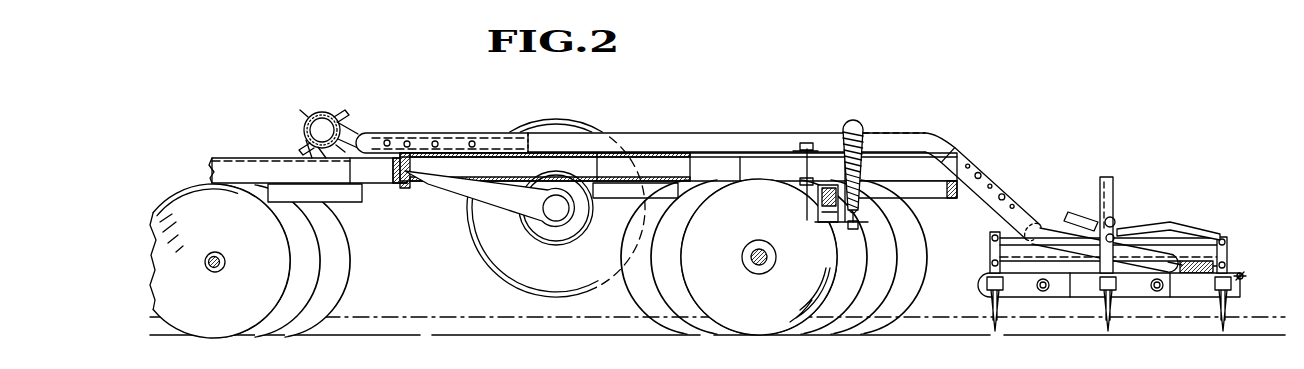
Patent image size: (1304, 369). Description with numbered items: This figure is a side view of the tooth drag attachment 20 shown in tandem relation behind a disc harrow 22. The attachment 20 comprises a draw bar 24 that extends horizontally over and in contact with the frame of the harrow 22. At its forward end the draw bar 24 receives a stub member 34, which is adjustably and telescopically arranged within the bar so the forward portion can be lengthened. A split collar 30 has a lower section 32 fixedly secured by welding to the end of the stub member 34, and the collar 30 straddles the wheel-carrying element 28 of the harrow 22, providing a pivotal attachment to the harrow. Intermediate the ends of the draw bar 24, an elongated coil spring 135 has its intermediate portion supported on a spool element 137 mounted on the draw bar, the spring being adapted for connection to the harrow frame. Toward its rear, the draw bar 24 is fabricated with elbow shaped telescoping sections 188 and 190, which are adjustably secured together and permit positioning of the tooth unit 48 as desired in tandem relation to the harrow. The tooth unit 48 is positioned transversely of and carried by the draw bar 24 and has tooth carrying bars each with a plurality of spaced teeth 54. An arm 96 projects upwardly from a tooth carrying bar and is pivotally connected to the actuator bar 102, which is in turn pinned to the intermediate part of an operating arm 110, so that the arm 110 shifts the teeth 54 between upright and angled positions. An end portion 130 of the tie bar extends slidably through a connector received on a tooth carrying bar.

The tooth drag attachment 20 is at (1144, 219).
The disc harrow 22 is at (703, 127).
The draw bar 24 is at (927, 134).
The wheel-carrying element 28 is at (311, 117).
The split collar 30 is at (325, 110).
The lower section 32 is at (348, 127).
The stub member 34 is at (304, 125).
The tooth unit 48 is at (1244, 294).
The teeth 54 is at (1113, 301).
The arm 96 is at (1228, 249).
The actuator bar 102 is at (1187, 230).
The operating arm 110 is at (1114, 201).
The other end portion 130 is at (1244, 278).
The coil spring 135 is at (853, 121).
The spool element 137 is at (868, 130).
The telescoping section 188 is at (944, 149).
The telescoping section 190 is at (1021, 207).